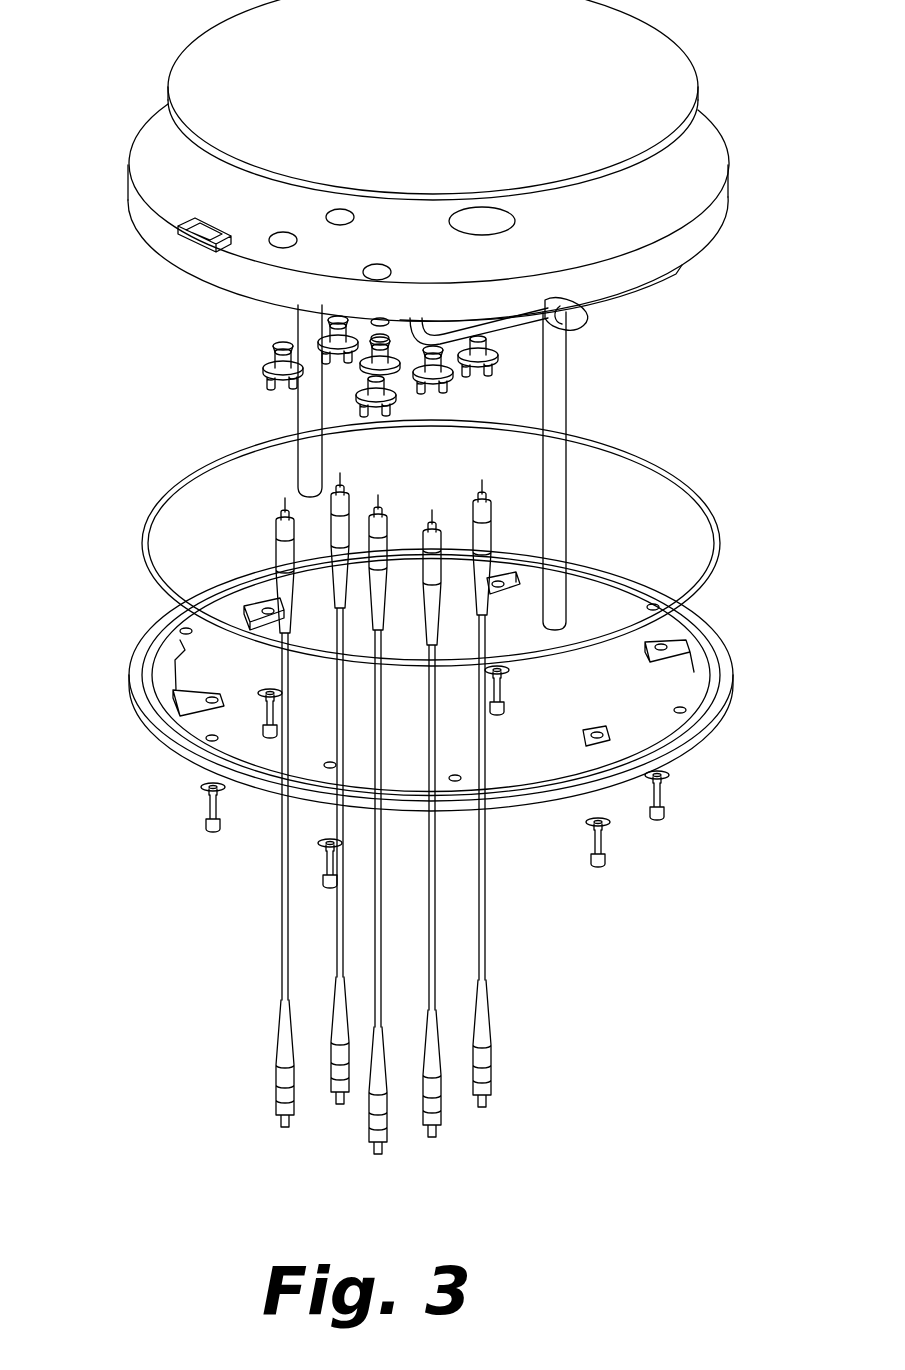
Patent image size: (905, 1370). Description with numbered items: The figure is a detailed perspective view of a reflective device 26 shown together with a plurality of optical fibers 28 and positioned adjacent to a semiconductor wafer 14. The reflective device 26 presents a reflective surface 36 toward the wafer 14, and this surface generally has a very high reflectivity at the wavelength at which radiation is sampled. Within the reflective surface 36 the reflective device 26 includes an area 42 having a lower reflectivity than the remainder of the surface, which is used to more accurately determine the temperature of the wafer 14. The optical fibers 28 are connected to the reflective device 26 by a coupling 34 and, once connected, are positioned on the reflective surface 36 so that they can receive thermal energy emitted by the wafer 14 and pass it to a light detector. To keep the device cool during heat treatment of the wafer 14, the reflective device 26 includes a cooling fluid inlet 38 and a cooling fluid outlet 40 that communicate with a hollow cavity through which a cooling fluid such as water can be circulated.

The wafer 14 is at (665, 52).
The reflective device 26 is at (710, 152).
The reflective surface 36 is at (145, 140).
The area of lower reflectivity 42 is at (513, 212).
The coupling 34 is at (264, 372).
The cooling fluid outlet 40 is at (302, 405).
The cooling fluid inlet 38 is at (565, 418).
The optical fibers 28 is at (445, 745).